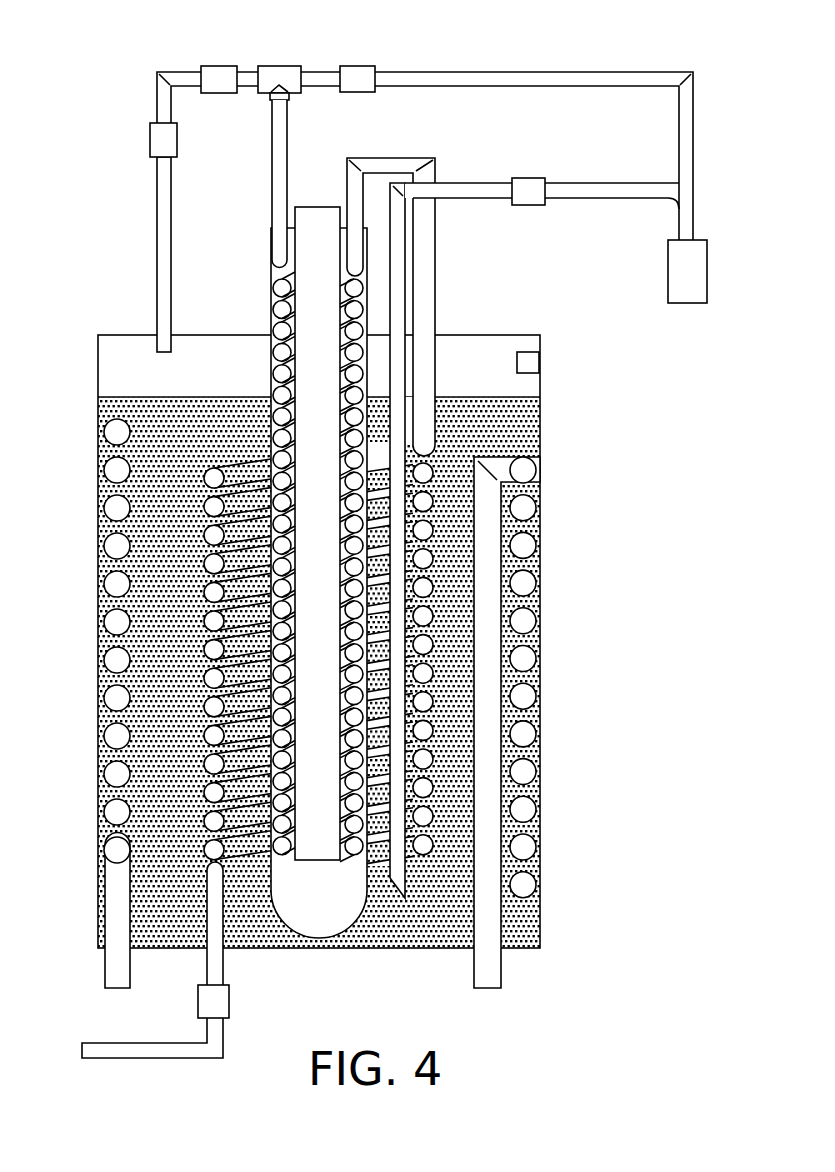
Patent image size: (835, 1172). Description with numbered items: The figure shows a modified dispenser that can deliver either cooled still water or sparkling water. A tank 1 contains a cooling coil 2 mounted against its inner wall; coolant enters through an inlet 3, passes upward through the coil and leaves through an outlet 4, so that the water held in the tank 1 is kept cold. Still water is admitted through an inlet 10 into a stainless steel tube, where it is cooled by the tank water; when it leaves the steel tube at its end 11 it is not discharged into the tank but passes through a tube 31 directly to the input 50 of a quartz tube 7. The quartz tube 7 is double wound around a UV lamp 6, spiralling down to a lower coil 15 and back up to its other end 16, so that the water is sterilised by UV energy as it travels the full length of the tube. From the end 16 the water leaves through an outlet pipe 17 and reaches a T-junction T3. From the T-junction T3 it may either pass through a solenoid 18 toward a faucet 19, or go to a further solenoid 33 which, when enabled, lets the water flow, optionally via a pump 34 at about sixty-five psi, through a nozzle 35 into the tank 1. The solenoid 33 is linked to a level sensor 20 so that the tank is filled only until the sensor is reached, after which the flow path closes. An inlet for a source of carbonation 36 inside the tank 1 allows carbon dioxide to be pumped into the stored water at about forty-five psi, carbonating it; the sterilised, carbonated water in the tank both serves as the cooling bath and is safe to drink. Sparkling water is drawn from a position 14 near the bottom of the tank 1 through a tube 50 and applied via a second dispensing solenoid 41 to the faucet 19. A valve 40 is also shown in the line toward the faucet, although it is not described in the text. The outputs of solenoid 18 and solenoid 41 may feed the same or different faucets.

The tank 1 is at (98, 345).
The cooling coil 2 is at (105, 658).
The inlet 3 is at (110, 974).
The outlet 4 is at (495, 975).
The UV lamp 6 is at (315, 207).
The quartz tube 7 is at (272, 372).
The inlet 10 is at (100, 1060).
The steel tube end 11 is at (425, 447).
The position towards bottom of tank 14 is at (403, 898).
The lower coil 15 is at (297, 937).
The end of quartz tube 16 is at (272, 285).
The outlet pipe 17 is at (272, 155).
The solenoid 18 is at (229, 1003).
The faucet 19 is at (668, 292).
The level sensor 20 is at (540, 362).
The tube 31 is at (435, 300).
The solenoid 33 is at (213, 66).
The pump 34 is at (150, 140).
The nozzle 35 is at (157, 346).
The inlet for source of carbonation 36 is at (530, 930).
The valve 40 is at (353, 66).
The second dispensing solenoid 41 is at (525, 178).
The tube 50 is at (355, 244).
The T-junction T3 is at (281, 66).